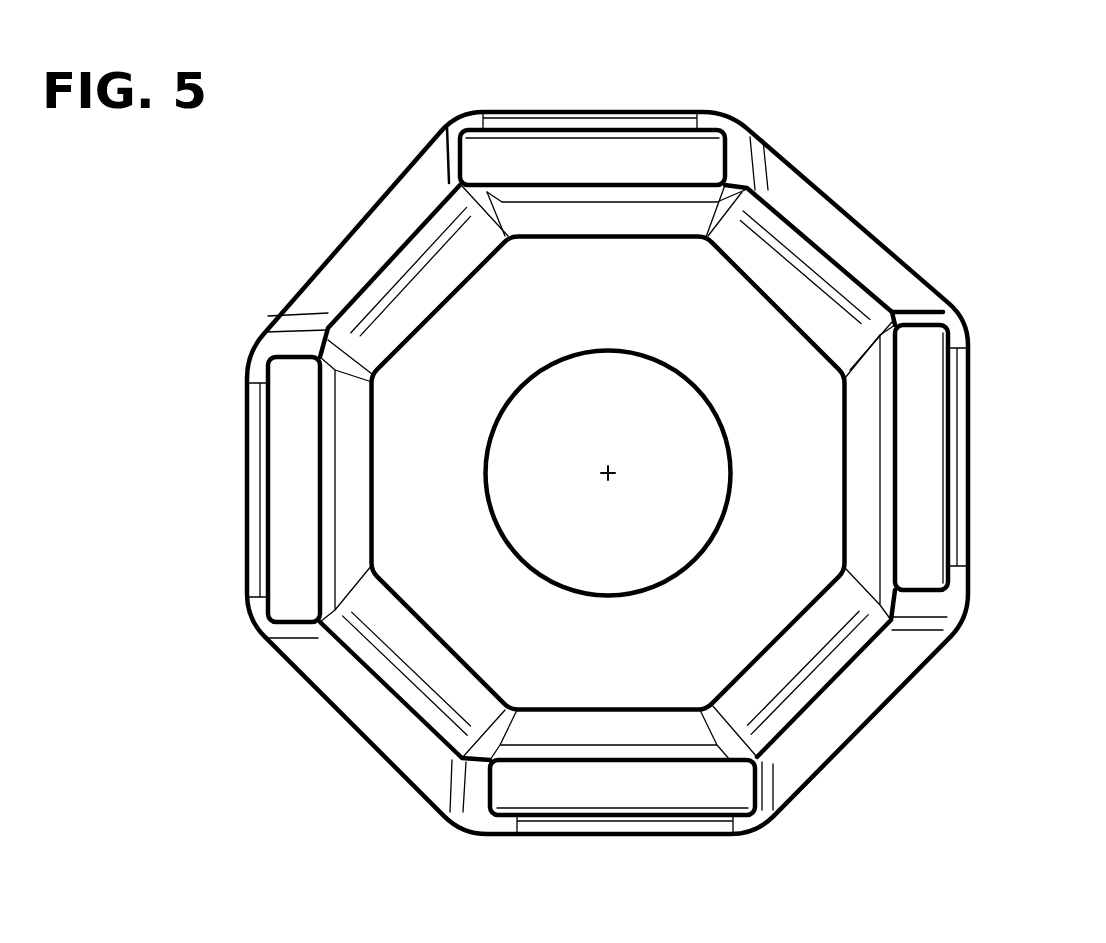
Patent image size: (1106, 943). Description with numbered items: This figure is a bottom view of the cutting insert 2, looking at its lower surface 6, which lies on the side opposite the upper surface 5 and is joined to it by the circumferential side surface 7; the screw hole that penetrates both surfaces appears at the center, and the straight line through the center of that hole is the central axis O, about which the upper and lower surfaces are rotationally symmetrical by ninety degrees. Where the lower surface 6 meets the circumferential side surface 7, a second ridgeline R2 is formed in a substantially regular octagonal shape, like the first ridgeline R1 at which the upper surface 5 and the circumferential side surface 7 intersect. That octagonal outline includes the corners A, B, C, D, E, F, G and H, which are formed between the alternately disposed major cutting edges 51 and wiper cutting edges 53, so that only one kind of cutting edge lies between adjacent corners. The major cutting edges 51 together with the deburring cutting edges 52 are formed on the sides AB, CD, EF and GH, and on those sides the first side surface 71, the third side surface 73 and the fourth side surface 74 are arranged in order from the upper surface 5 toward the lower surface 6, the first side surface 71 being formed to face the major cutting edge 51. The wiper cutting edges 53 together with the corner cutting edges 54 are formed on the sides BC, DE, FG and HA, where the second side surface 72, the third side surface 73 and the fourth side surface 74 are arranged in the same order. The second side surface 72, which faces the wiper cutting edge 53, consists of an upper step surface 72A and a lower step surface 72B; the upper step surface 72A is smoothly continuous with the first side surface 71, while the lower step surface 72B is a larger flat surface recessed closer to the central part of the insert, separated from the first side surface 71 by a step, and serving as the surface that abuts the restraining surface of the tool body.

The cutting insert 2 is at (596, 913).
The upper surface 5 is at (818, 775).
The lower surface 6 is at (770, 572).
The circumferential side surface 7 is at (845, 692).
The major cutting edge 51 is at (353, 223).
The deburring cutting edge 52 is at (740, 125).
The wiper cutting edge 53 is at (590, 112).
The corner cutting edge 54 is at (450, 125).
The first side surface 71 is at (390, 228).
The second side surface 72 is at (523, 302).
The upper step surface 72A is at (550, 117).
The lower step surface 72B is at (635, 170).
The third side surface 73 is at (385, 672).
The fourth side surface 74 is at (458, 688).
The central axis O is at (610, 468).
The first ridgeline R1 is at (893, 250).
The second ridgeline R2 is at (743, 270).
The corner A is at (448, 120).
The corner B is at (245, 362).
The corner C is at (262, 650).
The corner D is at (510, 836).
The corner E is at (768, 827).
The corner F is at (965, 570).
The corner G is at (960, 317).
The corner H is at (703, 112).